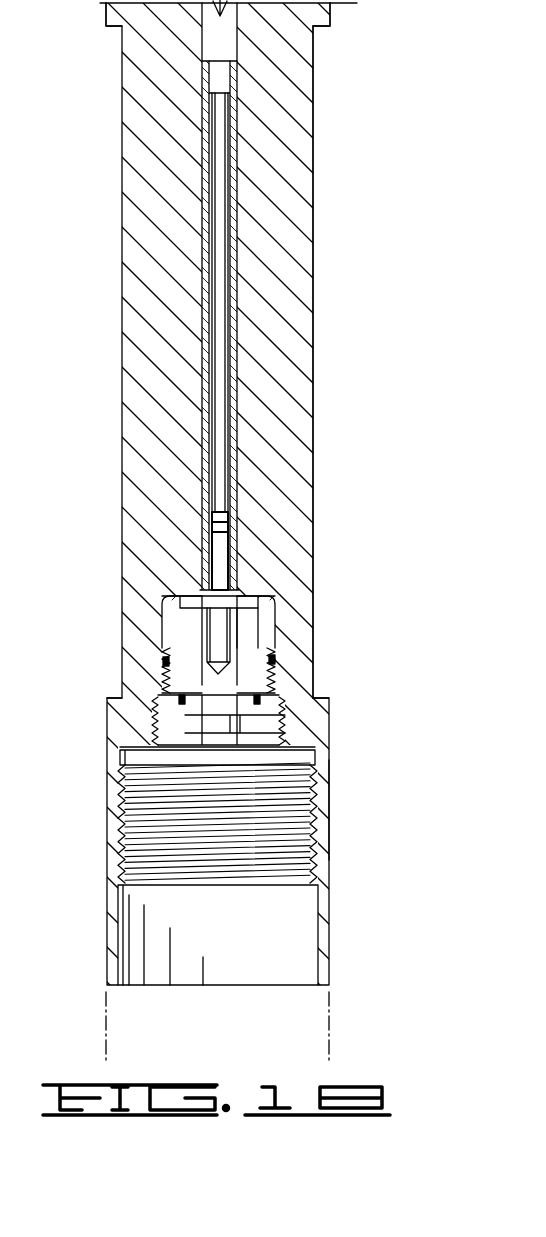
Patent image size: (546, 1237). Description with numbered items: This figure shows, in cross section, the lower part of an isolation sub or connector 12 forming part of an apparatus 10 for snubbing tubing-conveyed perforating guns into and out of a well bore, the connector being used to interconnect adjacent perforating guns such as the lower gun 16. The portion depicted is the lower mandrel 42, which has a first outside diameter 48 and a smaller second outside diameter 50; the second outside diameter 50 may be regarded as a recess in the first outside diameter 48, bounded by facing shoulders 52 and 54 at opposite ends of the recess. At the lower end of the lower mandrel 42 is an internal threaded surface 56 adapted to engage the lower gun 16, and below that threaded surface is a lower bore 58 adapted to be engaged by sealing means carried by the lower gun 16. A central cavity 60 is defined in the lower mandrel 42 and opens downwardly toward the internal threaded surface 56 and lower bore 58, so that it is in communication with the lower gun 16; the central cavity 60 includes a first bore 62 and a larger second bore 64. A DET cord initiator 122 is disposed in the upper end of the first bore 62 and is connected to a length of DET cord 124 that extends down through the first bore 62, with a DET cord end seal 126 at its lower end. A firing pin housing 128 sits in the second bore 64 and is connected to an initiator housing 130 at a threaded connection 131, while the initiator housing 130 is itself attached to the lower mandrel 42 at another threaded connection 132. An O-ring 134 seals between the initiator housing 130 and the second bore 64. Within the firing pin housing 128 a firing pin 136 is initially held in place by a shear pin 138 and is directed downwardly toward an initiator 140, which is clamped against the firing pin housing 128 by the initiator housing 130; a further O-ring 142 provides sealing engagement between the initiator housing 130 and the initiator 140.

The apparatus 10 is at (322, 450).
The isolation sub 12 is at (313, 394).
The lower perforating gun 16 is at (329, 1001).
The lower mandrel 42 is at (285, 317).
The first outside diameter 48 is at (328, 10).
The second outside diameter 50 is at (313, 197).
The shoulder 52 is at (315, 28).
The shoulder 54 is at (322, 692).
The internal threaded surface 56 is at (300, 835).
The lower bore 58 is at (305, 930).
The central cavity 60 is at (277, 346).
The first bore 62 is at (217, 290).
The second bore 64 is at (164, 622).
The DET cord initiator 122 is at (207, 42).
The DET cord 124 is at (218, 148).
The DET cord end seal 126 is at (222, 552).
The firing pin housing 128 is at (250, 632).
The initiator housing 130 is at (290, 746).
The threaded connection 131 is at (274, 668).
The threaded connection 132 is at (284, 705).
The O-ring 134 is at (163, 665).
The firing pin 136 is at (220, 633).
The shear pin 138 is at (147, 567).
The initiator 140 is at (205, 710).
The O-ring 142 is at (168, 697).